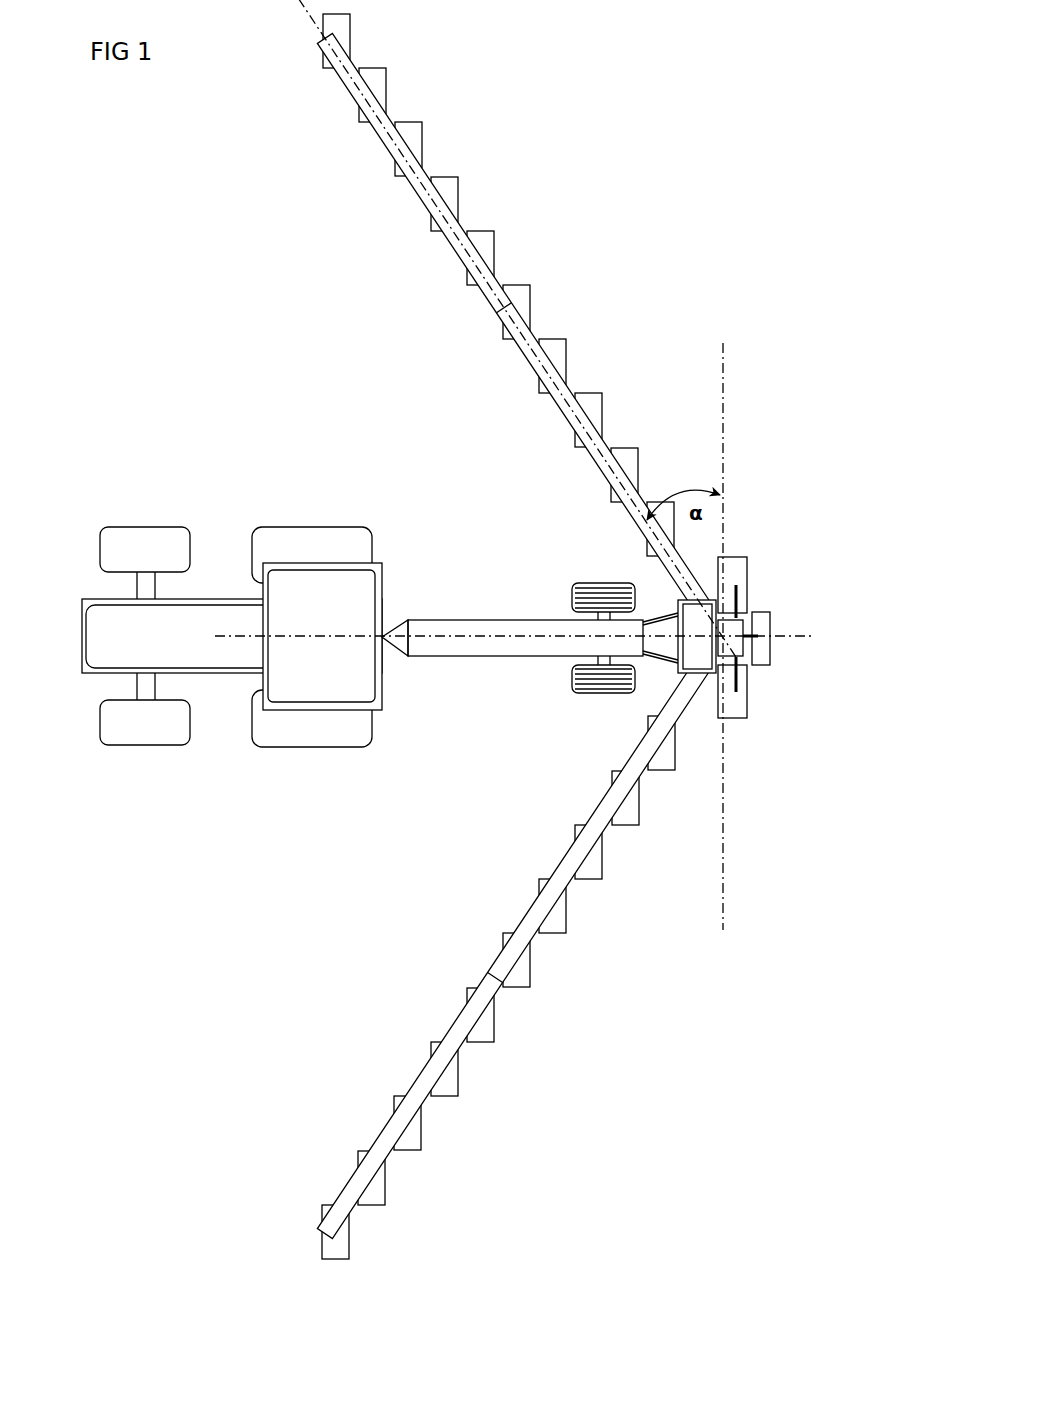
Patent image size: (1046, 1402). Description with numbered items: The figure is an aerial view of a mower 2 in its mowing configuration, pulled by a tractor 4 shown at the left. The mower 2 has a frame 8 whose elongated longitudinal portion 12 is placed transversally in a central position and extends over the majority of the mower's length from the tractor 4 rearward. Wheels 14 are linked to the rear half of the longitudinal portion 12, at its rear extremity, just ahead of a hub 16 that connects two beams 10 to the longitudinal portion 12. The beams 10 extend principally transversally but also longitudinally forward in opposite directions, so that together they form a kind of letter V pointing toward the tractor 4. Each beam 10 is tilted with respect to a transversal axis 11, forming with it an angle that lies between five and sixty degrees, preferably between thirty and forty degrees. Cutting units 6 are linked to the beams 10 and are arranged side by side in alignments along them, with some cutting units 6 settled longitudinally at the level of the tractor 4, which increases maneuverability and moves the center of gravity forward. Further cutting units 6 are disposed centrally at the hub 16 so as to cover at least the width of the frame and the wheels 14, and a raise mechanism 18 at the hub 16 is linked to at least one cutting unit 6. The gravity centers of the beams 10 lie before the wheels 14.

The mower 2 is at (776, 116).
The tractor 4 is at (202, 431).
The cutting units 6 is at (350, 24).
The frame 8 is at (453, 561).
The beam 10 is at (424, 362).
The transversal axis 11 is at (725, 380).
The longitudinal portion 12 is at (449, 640).
The wheels 14 is at (608, 582).
The hub 16 is at (690, 606).
The raise mechanism 18 is at (688, 672).